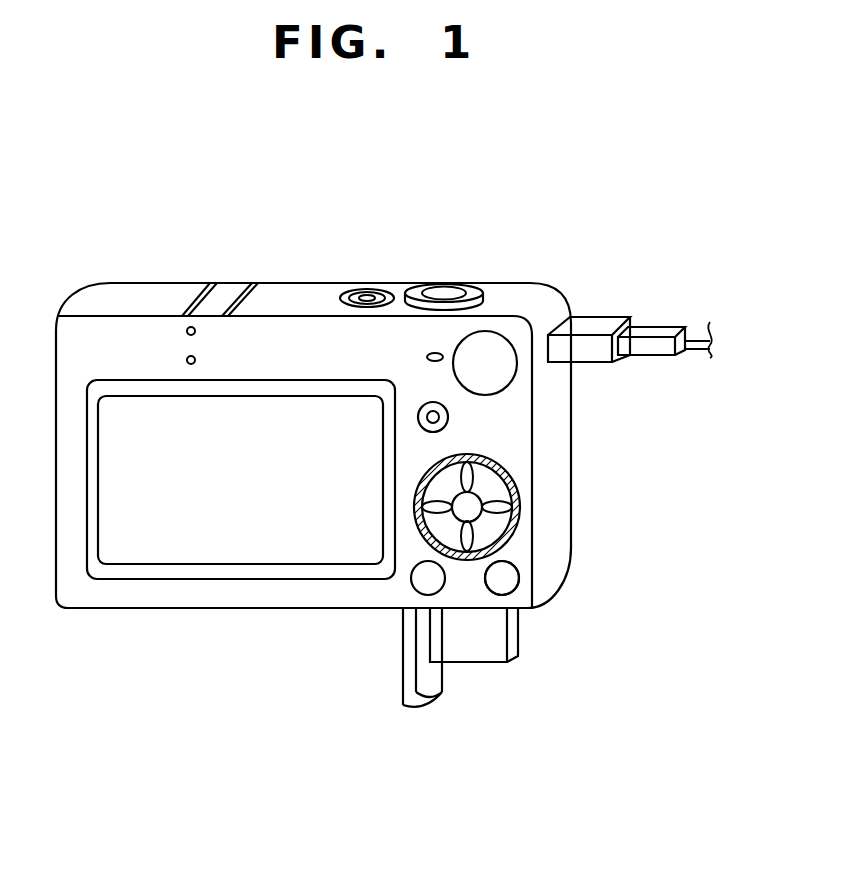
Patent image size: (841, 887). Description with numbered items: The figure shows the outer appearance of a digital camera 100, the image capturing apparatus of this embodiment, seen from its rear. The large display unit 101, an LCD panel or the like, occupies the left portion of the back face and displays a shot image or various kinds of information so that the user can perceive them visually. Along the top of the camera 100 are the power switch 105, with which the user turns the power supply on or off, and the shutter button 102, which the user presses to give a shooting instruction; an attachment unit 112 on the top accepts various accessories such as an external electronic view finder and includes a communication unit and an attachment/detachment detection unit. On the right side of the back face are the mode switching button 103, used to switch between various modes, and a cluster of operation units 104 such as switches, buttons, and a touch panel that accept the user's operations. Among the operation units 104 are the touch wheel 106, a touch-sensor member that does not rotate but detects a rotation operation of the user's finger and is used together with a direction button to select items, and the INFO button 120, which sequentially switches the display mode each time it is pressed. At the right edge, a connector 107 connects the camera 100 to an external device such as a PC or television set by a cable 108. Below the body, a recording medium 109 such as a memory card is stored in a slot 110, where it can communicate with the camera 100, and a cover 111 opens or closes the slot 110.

The digital camera 100 is at (135, 642).
The display unit 101 is at (145, 408).
The shutter button 102 is at (442, 285).
The mode switching button 103 is at (453, 362).
The operation units 104 is at (487, 302).
The power switch 105 is at (363, 292).
The touch wheel 106 is at (412, 518).
The connector 107 is at (590, 323).
The cable 108 is at (655, 332).
The recording medium 109 is at (473, 653).
The slot 110 is at (445, 610).
The cover 111 is at (422, 707).
The attachment unit 112 is at (227, 293).
The INFO button 120 is at (517, 588).